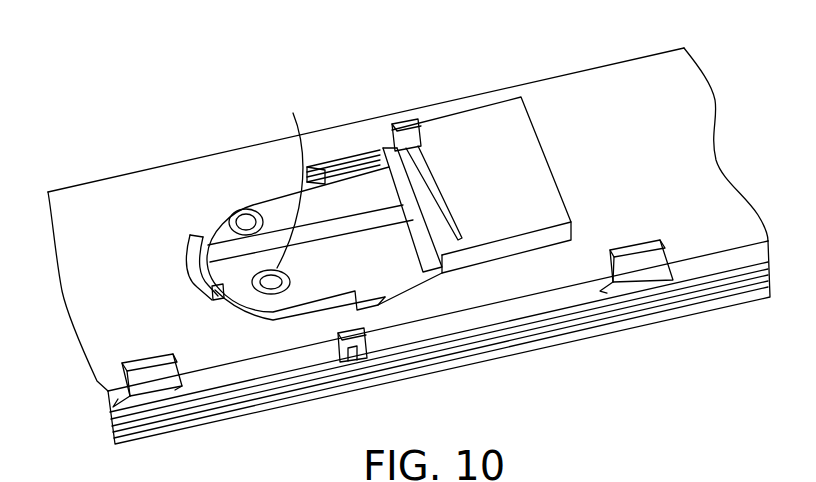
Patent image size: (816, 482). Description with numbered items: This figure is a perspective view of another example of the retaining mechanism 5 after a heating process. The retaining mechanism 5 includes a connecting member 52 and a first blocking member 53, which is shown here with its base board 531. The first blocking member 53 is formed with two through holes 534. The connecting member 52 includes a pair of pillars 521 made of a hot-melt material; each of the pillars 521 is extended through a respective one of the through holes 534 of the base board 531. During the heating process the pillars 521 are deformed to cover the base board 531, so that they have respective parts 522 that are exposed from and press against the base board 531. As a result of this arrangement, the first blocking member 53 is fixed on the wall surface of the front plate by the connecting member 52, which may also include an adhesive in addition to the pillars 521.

The retaining mechanism 5 is at (372, 115).
The connecting member 52 is at (273, 291).
The pillars 521 is at (299, 178).
The parts 522 is at (229, 222).
The first blocking member 53 is at (253, 193).
The base board 531 is at (373, 270).
The through holes 534 is at (218, 217).